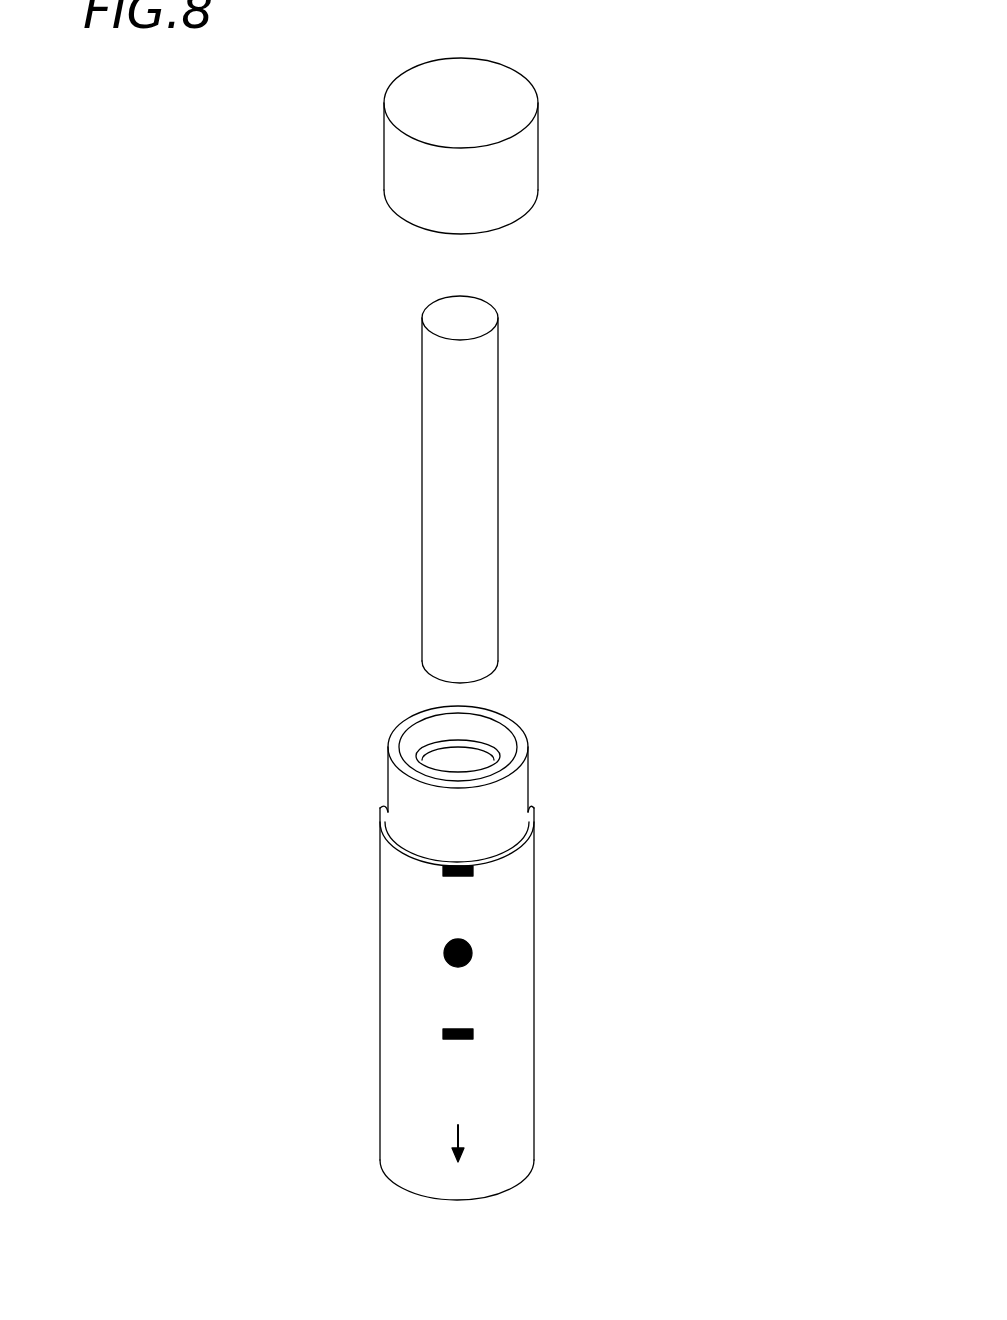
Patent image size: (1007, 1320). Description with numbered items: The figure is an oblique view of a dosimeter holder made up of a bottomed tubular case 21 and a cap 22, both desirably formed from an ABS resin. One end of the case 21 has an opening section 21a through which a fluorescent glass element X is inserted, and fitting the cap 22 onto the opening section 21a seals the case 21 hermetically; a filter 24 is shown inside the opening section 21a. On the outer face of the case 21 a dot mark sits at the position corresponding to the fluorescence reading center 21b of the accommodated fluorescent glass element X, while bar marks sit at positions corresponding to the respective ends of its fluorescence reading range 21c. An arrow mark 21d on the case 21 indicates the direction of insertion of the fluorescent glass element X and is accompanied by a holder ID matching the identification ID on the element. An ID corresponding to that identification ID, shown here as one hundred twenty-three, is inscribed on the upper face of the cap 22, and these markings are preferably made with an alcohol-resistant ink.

The cap 22 is at (537, 155).
The fluorescent glass element X is at (497, 470).
The bottomed tubular case 21 is at (512, 1137).
The opening section 21a is at (405, 727).
The filter 24 is at (468, 763).
The fluorescence reading center 21b is at (445, 957).
The fluorescence reading range 21c is at (474, 874).
The arrow mark 21d is at (442, 1103).